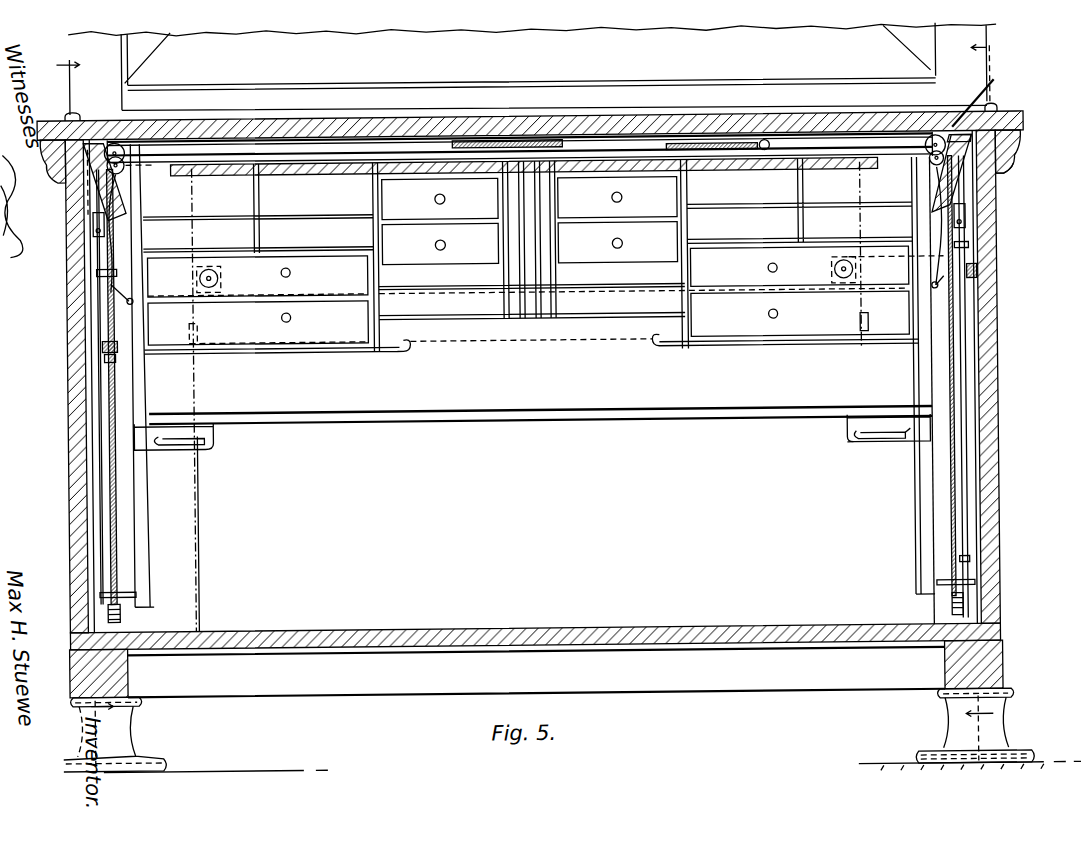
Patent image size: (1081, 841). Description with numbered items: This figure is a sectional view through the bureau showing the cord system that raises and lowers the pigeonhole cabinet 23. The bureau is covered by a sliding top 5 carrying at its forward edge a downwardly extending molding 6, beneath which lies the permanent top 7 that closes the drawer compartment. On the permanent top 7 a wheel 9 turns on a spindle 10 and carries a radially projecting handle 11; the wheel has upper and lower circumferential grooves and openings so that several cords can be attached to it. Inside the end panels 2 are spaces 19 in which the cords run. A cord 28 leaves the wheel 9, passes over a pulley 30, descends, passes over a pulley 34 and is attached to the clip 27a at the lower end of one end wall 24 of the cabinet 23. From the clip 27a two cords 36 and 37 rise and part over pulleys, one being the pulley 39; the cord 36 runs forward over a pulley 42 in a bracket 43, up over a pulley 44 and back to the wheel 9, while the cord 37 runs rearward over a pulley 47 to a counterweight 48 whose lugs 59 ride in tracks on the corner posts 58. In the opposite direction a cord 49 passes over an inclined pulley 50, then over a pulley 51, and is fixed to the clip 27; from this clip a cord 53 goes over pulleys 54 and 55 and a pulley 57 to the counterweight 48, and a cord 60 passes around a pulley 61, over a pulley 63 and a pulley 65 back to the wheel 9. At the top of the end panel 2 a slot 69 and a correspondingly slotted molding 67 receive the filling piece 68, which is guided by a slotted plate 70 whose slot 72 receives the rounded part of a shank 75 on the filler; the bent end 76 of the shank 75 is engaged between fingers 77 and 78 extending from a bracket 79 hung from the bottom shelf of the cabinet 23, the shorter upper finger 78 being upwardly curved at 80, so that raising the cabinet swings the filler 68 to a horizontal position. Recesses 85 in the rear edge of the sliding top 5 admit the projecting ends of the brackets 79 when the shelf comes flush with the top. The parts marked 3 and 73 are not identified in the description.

The end panel 2 is at (698, 630).
The side wall 3 is at (72, 428).
The sliding top 5 is at (750, 114).
The molding 6 is at (983, 390).
The permanent top 7 is at (1010, 300).
The wheel 9 is at (646, 168).
The spindle 10 is at (517, 175).
The handle 11 is at (792, 138).
The space 19 is at (98, 332).
The pigeonhole cabinet 23 is at (541, 436).
The end wall 24 is at (142, 490).
The rope clip 27 is at (973, 587).
The clip 27a is at (134, 590).
The cord 28 is at (236, 151).
The pulley 30 is at (131, 152).
The pulley 34 is at (106, 614).
The cord 36 is at (112, 458).
The cord 37 is at (100, 418).
The pulley 39 is at (98, 270).
The pulley 42 is at (105, 355).
The bracket 43 is at (103, 343).
The pulley 44 is at (118, 146).
The pulley 47 is at (219, 275).
The counterweight 48 is at (632, 314).
The cord 49 is at (973, 192).
The pulley 50 is at (988, 96).
The pulley 51 is at (935, 287).
The cord 53 is at (968, 512).
The pulley 54 is at (978, 278).
The pulley 55 is at (968, 252).
The pulley 57 is at (836, 274).
The corner post 58 is at (878, 232).
The lug 59 is at (202, 332).
The cord 60 is at (950, 366).
The pulley 61 is at (961, 614).
The pulley 63 is at (968, 563).
The pulley 65 is at (940, 140).
The molding 67 is at (1008, 166).
The filling piece 68 is at (78, 112).
The slot 69 is at (1014, 141).
The slotted plate 70 is at (95, 218).
The slot 72 is at (768, 152).
The shelf 73 is at (302, 165).
The shank 75 is at (120, 246).
The bent end 76 is at (127, 296).
The finger 77 is at (878, 443).
The finger 78 is at (876, 420).
The bracket 79 is at (852, 436).
The upwardly curved extremity 80 is at (906, 443).
The recess 85 is at (856, 135).